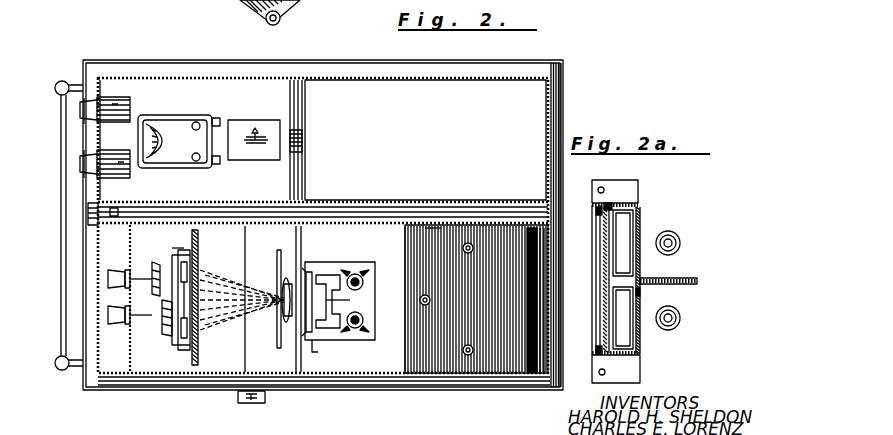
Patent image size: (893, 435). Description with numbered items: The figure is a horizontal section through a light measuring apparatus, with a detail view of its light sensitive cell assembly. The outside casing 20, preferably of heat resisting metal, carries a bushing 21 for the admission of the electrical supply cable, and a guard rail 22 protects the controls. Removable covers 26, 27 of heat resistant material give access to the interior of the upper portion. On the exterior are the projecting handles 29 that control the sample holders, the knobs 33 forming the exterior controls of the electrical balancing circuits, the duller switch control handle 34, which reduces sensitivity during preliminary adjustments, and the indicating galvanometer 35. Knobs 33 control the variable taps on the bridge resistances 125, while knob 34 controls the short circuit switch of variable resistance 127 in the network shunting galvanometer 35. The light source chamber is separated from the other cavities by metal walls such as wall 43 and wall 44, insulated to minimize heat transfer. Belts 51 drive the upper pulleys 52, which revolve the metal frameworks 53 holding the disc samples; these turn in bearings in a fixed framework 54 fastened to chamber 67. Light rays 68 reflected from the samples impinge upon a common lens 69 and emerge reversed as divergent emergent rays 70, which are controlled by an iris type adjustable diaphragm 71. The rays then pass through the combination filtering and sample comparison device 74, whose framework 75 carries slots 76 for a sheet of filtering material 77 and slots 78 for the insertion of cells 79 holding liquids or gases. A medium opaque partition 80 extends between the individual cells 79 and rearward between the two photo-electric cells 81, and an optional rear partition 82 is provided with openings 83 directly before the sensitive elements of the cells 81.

In FIG. 2, the outside casing 20 is at (336, 388).
In FIG. 2, the bushing 21 is at (256, 403).
In FIG. 2, the guard rail 22 is at (61, 270).
In FIG. 2, the removable cover 26 is at (532, 104).
In FIG. 2, the removable cover 27 is at (476, 224).
In FIG. 2, the projecting handles 29 is at (105, 318).
In FIG. 2, the exterior controls of the electrical balancing circuits 33 is at (83, 162).
In FIG. 2, the duller switch control handle 34 is at (110, 214).
In FIG. 2, the indicating galvanometer 35 is at (180, 125).
In FIG. 2, the wall 43 is at (535, 228).
In FIG. 2, the wall 44 is at (434, 226).
In FIG. 2, the belts 51 is at (156, 270).
In FIG. 2, the upper pulleys 52 is at (166, 330).
In FIG. 2, the metal frameworks 53 is at (188, 356).
In FIG. 2, the fixed framework 54 is at (177, 248).
In FIG. 2, the chamber 67 is at (219, 376).
In FIG. 2, the light rays 68 is at (240, 305).
In FIG. 2, the common lens 69 is at (280, 300).
In FIG. 2, the emergent light rays 70 is at (314, 346).
In FIG. 2, the adjustable diaphragm 71 is at (308, 290).
In FIG. 2, the filtering and sample comparison device 74 is at (338, 272).
In FIG. 2A, the filtering and sample comparison device 74 is at (632, 192).
In FIG. 2A, the framework 75 is at (608, 206).
In FIG. 2A, the slots 76 is at (598, 212).
In FIG. 2A, the filtering material 77 is at (600, 298).
In FIG. 2A, the slots 78 is at (638, 212).
In FIG. 2A, the cells 79 is at (620, 232).
In FIG. 2A, the medium opaque partition 80 is at (680, 279).
In FIG. 2, the photo-electric cells 81 is at (365, 279).
In FIG. 2A, the photo-electric cells 81 is at (679, 238).
In FIG. 2A, the partition 82 is at (640, 292).
In FIG. 2A, the openings 83 is at (640, 240).
In FIG. 2, the resistances 125 is at (121, 162).
In FIG. 2, the variable resistance 127 is at (303, 140).